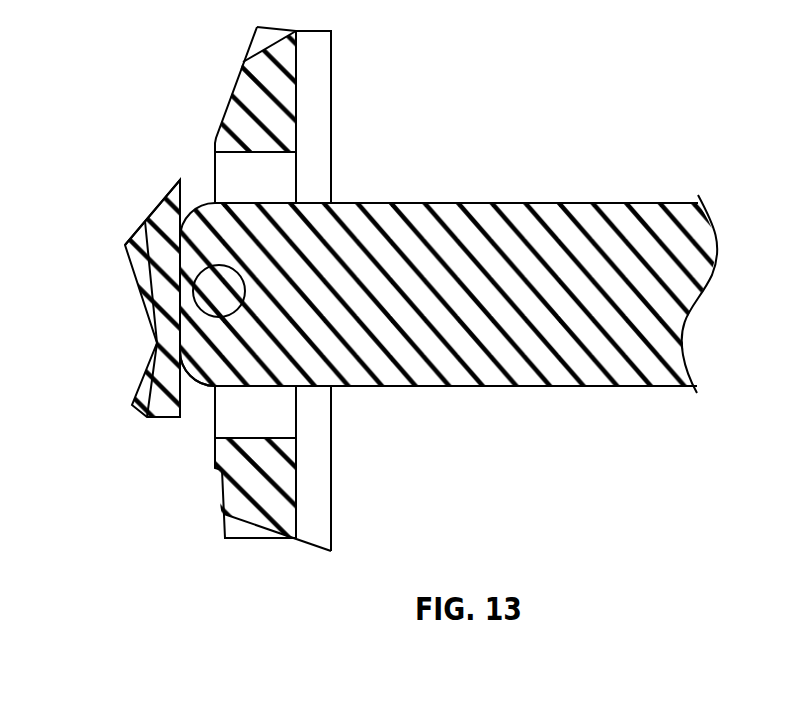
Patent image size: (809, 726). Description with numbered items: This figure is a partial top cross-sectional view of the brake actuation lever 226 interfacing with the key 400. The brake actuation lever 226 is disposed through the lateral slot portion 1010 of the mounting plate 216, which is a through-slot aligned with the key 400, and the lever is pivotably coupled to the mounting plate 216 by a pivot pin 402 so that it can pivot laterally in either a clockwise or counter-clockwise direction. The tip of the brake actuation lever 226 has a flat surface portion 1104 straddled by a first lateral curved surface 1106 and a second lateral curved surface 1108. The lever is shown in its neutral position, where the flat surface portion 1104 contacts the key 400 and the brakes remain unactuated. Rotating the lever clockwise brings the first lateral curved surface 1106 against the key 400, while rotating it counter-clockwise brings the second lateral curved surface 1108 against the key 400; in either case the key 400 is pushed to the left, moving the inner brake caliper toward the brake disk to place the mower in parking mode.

The mounting plate 216 is at (242, 60).
The brake actuation lever 226 is at (577, 202).
The key 400 is at (190, 206).
The pivot pin 402 is at (235, 263).
The lateral slot portion 1010 is at (217, 176).
The flat surface portion 1104 is at (174, 300).
The first lateral curved surface 1106 is at (202, 381).
The second lateral curved surface 1108 is at (167, 217).